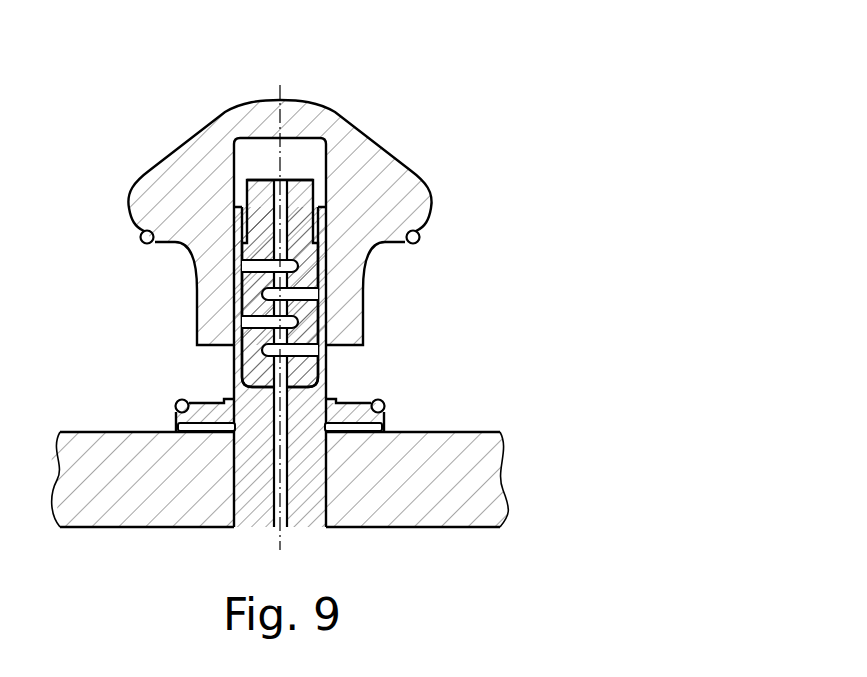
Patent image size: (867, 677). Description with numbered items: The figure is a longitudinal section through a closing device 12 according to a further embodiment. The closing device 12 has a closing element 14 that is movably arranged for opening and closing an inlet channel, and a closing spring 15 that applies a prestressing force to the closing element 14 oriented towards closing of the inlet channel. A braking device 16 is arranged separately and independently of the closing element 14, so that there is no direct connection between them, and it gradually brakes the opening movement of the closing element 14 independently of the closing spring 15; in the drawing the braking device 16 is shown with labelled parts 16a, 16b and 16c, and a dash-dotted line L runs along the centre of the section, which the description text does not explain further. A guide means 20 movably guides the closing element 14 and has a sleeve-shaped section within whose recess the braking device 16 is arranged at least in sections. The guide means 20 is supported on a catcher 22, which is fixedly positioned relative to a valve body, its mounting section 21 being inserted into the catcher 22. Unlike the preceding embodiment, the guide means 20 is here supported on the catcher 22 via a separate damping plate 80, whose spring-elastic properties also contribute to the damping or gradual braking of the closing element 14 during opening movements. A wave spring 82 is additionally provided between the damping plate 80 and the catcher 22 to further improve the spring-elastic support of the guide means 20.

The closing device 12 is at (282, 292).
The closing element 14 is at (385, 174).
The closing spring 15 is at (140, 237).
The braking device 16 is at (282, 279).
The insert body 16a is at (300, 202).
The fins 16b is at (260, 304).
The insert end face / bore 16c is at (262, 177).
The guide means 20 is at (320, 361).
The mounting section 21 is at (307, 507).
The catcher 22 is at (433, 505).
The damping plate 80 is at (358, 407).
The wave spring 82 is at (370, 434).
The longitudinal axis L is at (278, 90).